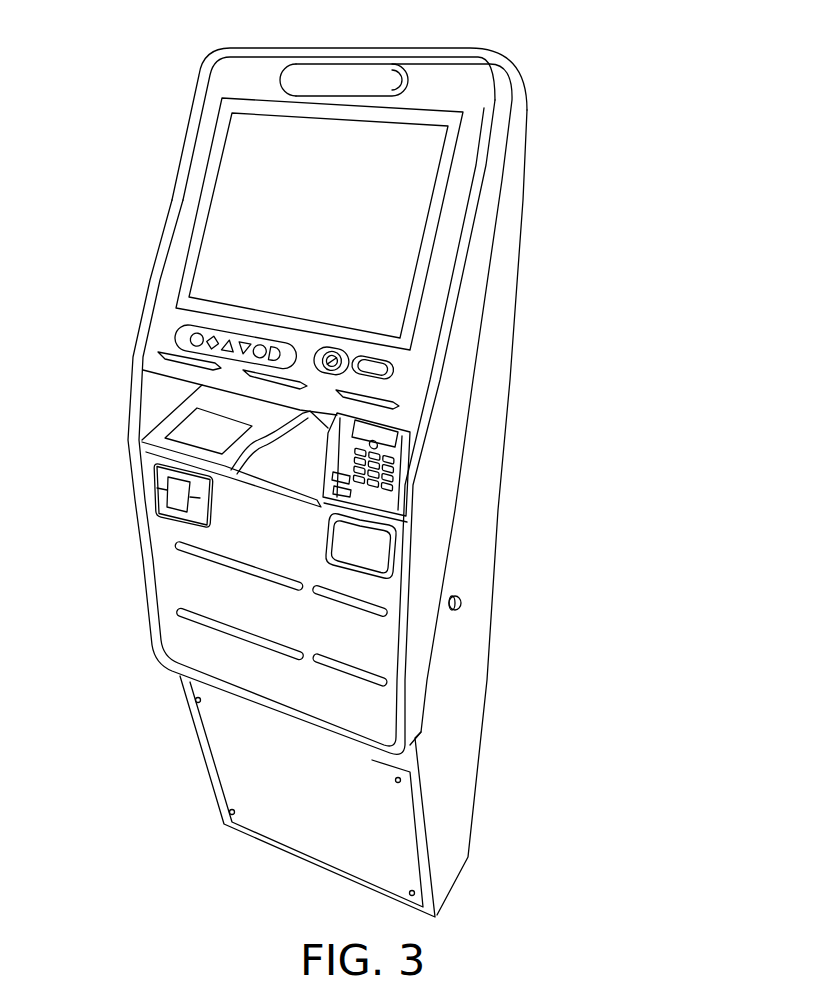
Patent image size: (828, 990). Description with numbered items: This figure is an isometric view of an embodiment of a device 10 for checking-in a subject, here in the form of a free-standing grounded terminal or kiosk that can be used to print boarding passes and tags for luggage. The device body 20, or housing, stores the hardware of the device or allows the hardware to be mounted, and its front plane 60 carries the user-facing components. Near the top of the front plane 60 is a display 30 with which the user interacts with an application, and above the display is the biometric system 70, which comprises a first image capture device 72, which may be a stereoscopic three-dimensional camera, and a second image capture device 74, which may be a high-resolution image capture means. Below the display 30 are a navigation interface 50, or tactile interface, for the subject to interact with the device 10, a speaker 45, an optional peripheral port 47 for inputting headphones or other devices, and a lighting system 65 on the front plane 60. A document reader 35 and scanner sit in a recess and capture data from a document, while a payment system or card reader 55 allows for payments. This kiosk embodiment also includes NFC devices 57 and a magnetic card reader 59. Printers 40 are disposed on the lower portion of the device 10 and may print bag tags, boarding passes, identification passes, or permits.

The device 10 is at (604, 114).
The device body 20 is at (512, 205).
The display 30 is at (247, 140).
The document reader 35 is at (297, 469).
The printers 40 is at (387, 608).
The speaker 45 is at (333, 362).
The peripheral port 47 is at (397, 377).
The navigation interface 50 is at (175, 336).
The card reader 55 is at (385, 434).
The NFC devices 57 is at (387, 557).
The magnetic card reader 59 is at (175, 497).
The front plane 60 is at (188, 207).
The lighting system 65 is at (212, 373).
The biometric system 70 is at (361, 44).
The first image capture device 72 is at (338, 84).
The second image capture device 74 is at (292, 81).